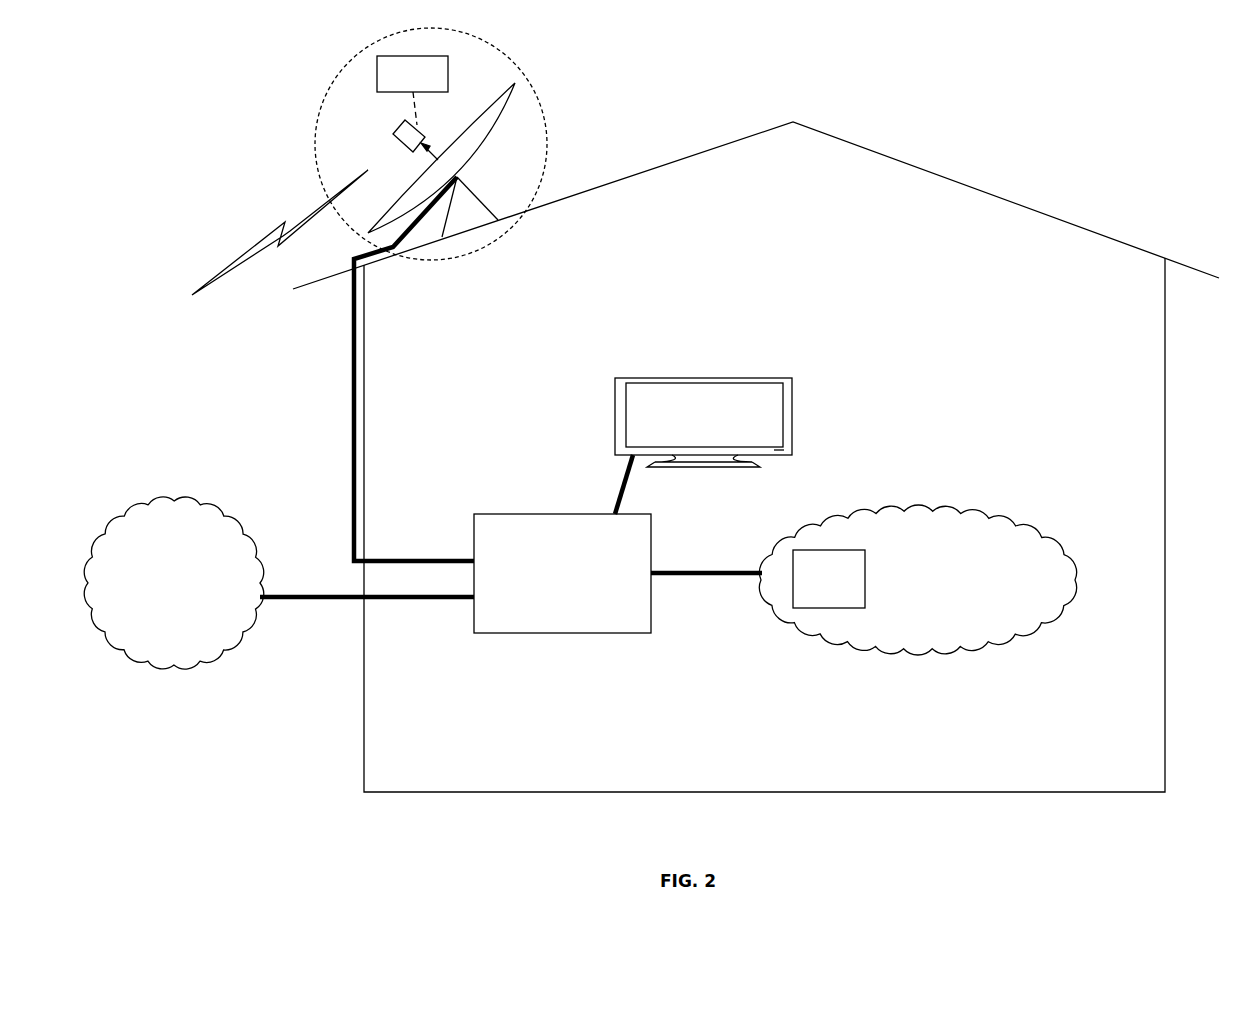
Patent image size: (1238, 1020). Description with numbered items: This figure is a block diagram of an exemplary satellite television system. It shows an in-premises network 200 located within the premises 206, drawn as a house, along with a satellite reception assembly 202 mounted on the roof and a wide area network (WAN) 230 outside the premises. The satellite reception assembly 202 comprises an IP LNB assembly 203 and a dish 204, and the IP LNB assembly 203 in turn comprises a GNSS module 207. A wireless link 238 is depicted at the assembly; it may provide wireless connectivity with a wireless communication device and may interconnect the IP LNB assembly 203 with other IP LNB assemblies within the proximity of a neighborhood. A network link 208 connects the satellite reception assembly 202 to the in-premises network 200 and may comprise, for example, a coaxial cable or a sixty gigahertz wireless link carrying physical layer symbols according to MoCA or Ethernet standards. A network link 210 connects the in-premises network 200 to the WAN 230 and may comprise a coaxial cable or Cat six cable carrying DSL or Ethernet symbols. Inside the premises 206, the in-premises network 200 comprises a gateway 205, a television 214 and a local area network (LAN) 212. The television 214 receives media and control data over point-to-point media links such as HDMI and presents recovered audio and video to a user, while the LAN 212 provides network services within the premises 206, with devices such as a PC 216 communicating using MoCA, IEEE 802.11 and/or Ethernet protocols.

The in-premises network 200 is at (1050, 312).
The satellite reception assembly 202 is at (545, 145).
The IP LNB assembly 203 is at (398, 128).
The dish 204 is at (490, 108).
The gateway 205 is at (548, 597).
The premises 206 is at (1025, 208).
The GNSS module 207 is at (399, 84).
The network link 208 is at (352, 366).
The network link 210 is at (334, 597).
The local area network (LAN) 212 is at (903, 600).
The television 214 is at (632, 378).
The PC 216 is at (815, 600).
The wide area network (WAN) 230 is at (160, 607).
The wireless link 238 is at (240, 257).